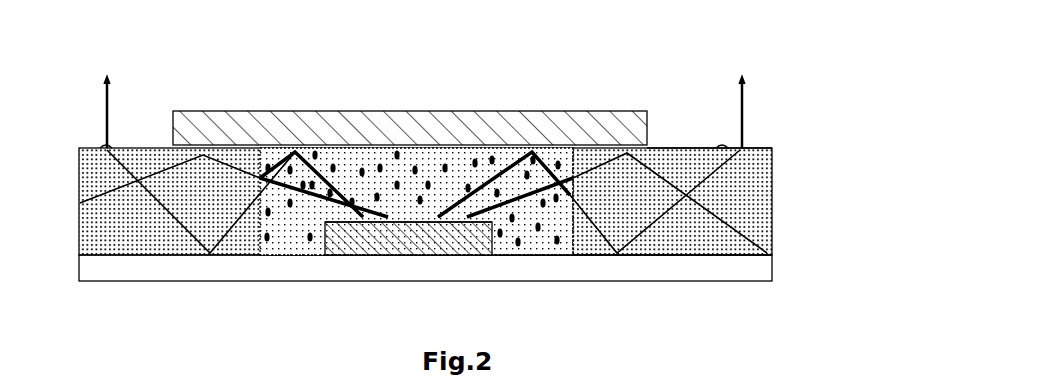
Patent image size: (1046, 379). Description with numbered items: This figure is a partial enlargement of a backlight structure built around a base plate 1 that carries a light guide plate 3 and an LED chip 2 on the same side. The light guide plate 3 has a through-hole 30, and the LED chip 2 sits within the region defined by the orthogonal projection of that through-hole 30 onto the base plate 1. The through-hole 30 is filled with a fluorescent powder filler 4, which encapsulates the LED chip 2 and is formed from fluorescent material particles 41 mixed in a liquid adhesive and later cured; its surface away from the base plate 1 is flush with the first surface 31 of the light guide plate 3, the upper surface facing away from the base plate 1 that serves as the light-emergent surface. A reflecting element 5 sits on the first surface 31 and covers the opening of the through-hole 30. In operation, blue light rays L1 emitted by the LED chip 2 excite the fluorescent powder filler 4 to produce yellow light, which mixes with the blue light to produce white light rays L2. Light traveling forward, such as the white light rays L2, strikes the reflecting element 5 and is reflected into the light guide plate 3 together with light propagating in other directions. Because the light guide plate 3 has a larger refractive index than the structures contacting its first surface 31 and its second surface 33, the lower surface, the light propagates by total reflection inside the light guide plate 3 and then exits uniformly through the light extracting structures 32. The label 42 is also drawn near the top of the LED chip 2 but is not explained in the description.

The base plate 1 is at (773, 264).
The LED chip 2 is at (405, 205).
The light guide plate 3 is at (773, 203).
The fluorescent powder filler 4 is at (430, 190).
The reflecting element 5 is at (400, 115).
The through-hole 30 is at (580, 250).
The first surface 31 is at (747, 152).
The light extracting structure 32 is at (106, 143).
The second surface 33 is at (703, 258).
The fluorescent material particles 41 is at (540, 226).
The light emitting surface 42 is at (450, 255).
The blue light rays L1 is at (313, 203).
The white light rays L2 is at (192, 242).